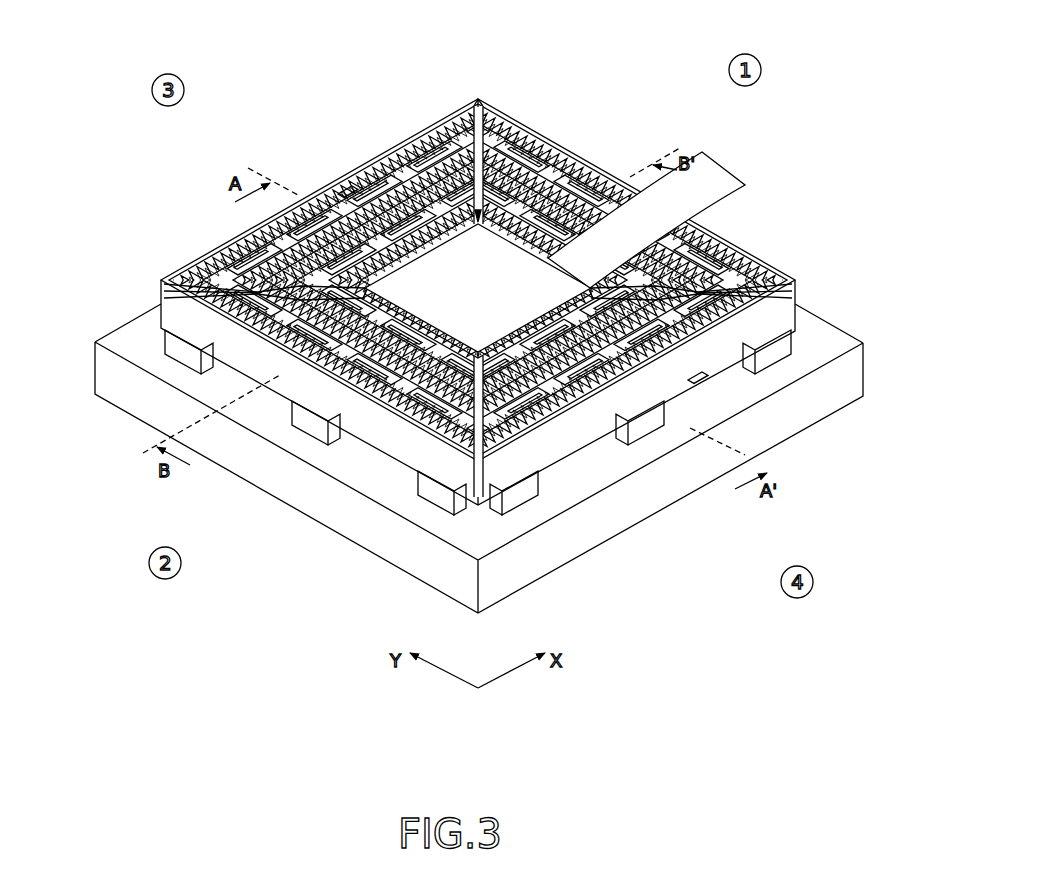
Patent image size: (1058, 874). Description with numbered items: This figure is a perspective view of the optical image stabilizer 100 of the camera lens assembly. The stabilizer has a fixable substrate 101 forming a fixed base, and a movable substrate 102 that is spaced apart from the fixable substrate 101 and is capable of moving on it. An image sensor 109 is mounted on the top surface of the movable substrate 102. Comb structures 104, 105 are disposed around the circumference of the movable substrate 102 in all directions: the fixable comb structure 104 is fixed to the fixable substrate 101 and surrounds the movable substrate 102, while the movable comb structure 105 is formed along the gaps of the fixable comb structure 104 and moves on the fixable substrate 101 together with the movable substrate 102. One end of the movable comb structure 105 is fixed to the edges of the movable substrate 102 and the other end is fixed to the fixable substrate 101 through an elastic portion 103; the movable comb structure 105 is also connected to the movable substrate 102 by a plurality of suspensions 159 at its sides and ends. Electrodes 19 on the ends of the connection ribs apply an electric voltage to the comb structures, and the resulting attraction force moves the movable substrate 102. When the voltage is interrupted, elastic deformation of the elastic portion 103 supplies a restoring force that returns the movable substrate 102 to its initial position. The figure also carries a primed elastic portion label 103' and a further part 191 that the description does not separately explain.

The optical image stabilizer 100 is at (337, 23).
The fixable substrate 101 is at (833, 392).
The movable substrate 102 is at (162, 293).
The elastic portion 103 is at (484, 354).
The anchor portion 103' is at (515, 257).
The fixable comb structure 104 is at (290, 400).
The movable comb structure 105 is at (370, 455).
The image sensor 109 is at (545, 165).
The suspension 159 is at (348, 190).
The electrode 19 is at (418, 142).
The spring beam 191 is at (718, 166).